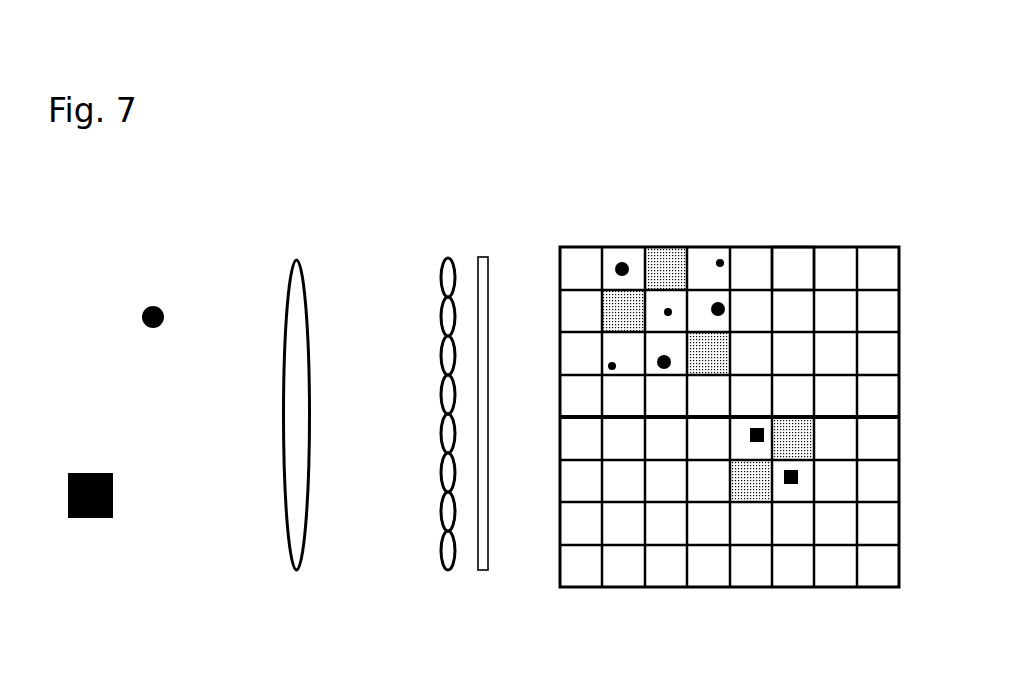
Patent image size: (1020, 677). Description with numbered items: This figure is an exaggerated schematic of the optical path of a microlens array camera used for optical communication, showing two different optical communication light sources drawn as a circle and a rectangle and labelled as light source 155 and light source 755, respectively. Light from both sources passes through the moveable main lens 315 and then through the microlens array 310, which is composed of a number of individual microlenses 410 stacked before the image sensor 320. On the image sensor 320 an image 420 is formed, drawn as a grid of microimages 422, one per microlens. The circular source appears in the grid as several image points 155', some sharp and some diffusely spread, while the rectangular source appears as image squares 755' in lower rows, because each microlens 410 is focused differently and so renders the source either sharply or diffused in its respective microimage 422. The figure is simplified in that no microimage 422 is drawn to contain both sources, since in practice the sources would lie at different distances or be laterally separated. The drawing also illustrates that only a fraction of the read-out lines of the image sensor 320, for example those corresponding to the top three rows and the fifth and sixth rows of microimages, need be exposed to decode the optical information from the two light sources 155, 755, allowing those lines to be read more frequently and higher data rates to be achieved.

The optical communication light source 155 is at (128, 277).
The optical communication light source 755 is at (113, 542).
The main lens 315 is at (269, 367).
The microlens array 310 is at (457, 411).
The microlens 410 is at (458, 268).
The image sensor 320 is at (503, 462).
The image 420 is at (609, 214).
The microimage 422 is at (772, 221).
The image of object point 155' is at (666, 261).
The image of object square 755' is at (781, 545).